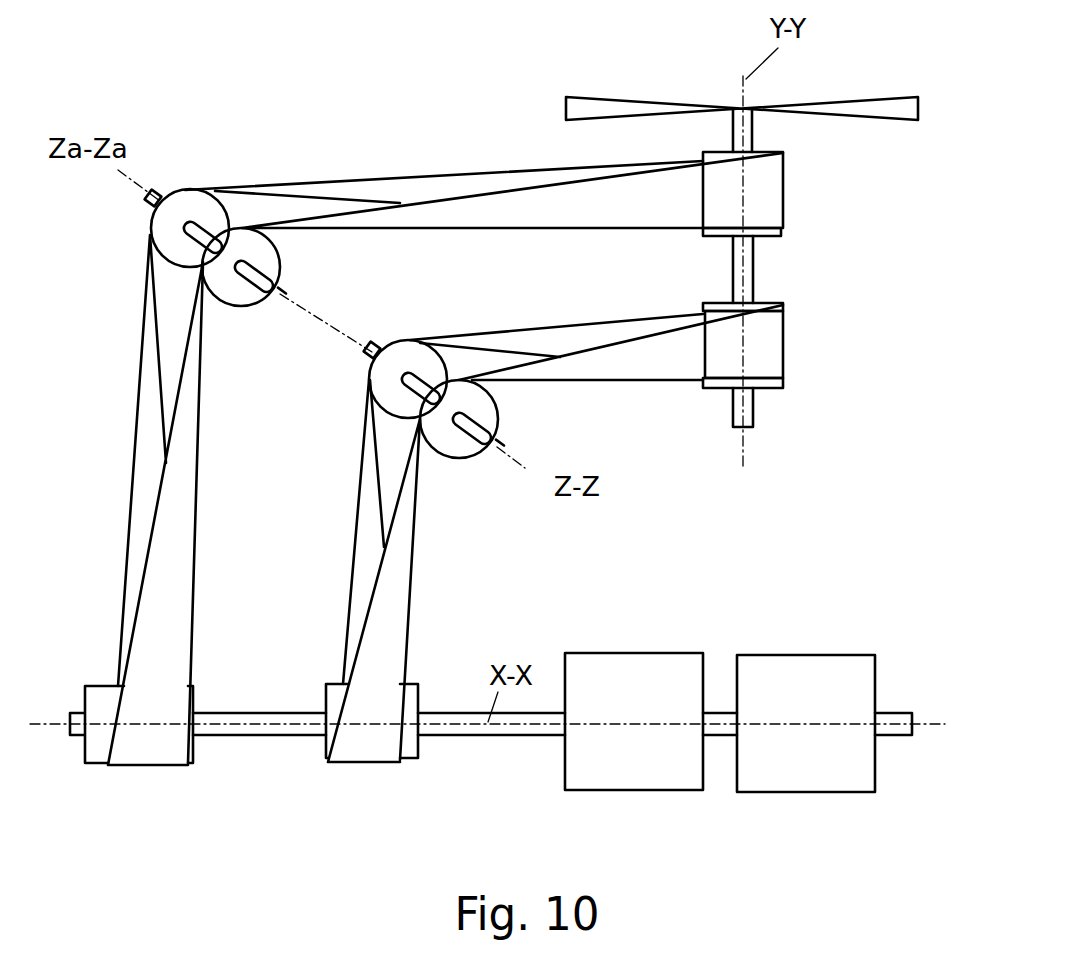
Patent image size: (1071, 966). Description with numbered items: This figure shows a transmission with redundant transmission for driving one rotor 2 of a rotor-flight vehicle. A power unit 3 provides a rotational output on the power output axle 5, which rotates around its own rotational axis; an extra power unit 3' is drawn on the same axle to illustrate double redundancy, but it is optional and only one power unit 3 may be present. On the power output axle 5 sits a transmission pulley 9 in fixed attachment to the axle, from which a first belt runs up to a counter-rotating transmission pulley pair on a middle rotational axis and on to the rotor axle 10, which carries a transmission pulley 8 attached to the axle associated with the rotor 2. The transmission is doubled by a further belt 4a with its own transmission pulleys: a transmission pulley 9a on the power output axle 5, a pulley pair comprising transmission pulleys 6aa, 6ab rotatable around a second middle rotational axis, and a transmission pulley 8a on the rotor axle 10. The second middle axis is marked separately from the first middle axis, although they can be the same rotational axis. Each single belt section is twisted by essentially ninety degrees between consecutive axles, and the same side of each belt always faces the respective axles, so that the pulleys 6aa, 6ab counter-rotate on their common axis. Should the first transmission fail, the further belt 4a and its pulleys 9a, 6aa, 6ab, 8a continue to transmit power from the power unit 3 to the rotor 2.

The rotor 2 is at (590, 108).
The rotor axle 10 is at (755, 125).
The transmission pulley 8a is at (783, 230).
The transmission pulley 8 is at (782, 387).
The belt 4a is at (357, 183).
The transmission pulley 6aa is at (189, 202).
The transmission pulley 6ab is at (267, 257).
The transmission pulley 9a is at (98, 690).
The transmission pulley 9 is at (325, 680).
The power output axle 5 is at (295, 712).
The power unit 3 is at (634, 721).
The extra power unit 3' is at (806, 723).